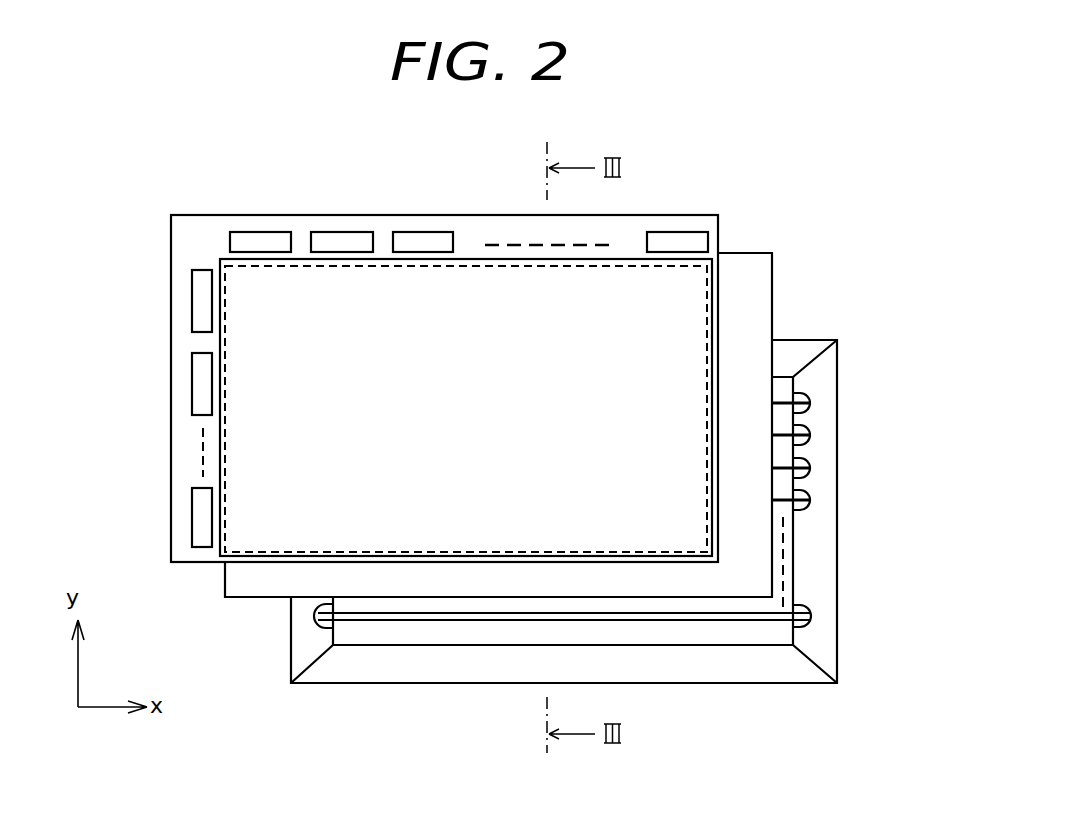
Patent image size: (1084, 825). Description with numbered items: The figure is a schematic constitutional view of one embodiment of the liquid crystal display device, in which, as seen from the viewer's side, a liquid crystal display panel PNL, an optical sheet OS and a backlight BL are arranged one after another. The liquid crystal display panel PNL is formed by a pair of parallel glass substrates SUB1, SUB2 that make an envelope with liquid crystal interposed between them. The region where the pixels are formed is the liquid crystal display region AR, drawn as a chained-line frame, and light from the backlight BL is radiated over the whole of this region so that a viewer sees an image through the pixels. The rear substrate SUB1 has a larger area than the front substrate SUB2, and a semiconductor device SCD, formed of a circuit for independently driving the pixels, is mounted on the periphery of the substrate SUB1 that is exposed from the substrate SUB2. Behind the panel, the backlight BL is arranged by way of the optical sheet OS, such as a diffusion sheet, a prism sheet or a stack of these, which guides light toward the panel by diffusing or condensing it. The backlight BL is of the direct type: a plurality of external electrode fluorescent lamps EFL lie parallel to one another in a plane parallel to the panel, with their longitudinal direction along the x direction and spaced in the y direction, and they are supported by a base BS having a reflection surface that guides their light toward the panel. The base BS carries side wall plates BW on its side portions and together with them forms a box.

The liquid crystal display panel PNL is at (390, 336).
The substrate SUB1 is at (172, 296).
The substrate SUB2 is at (220, 447).
The semiconductor device SCD is at (427, 238).
The liquid crystal display region AR is at (466, 409).
The optical sheet OS is at (775, 278).
The backlight BL is at (604, 541).
The side wall plates BW is at (830, 363).
The base BS is at (791, 563).
The external electrode fluorescent lamps EFL is at (745, 620).